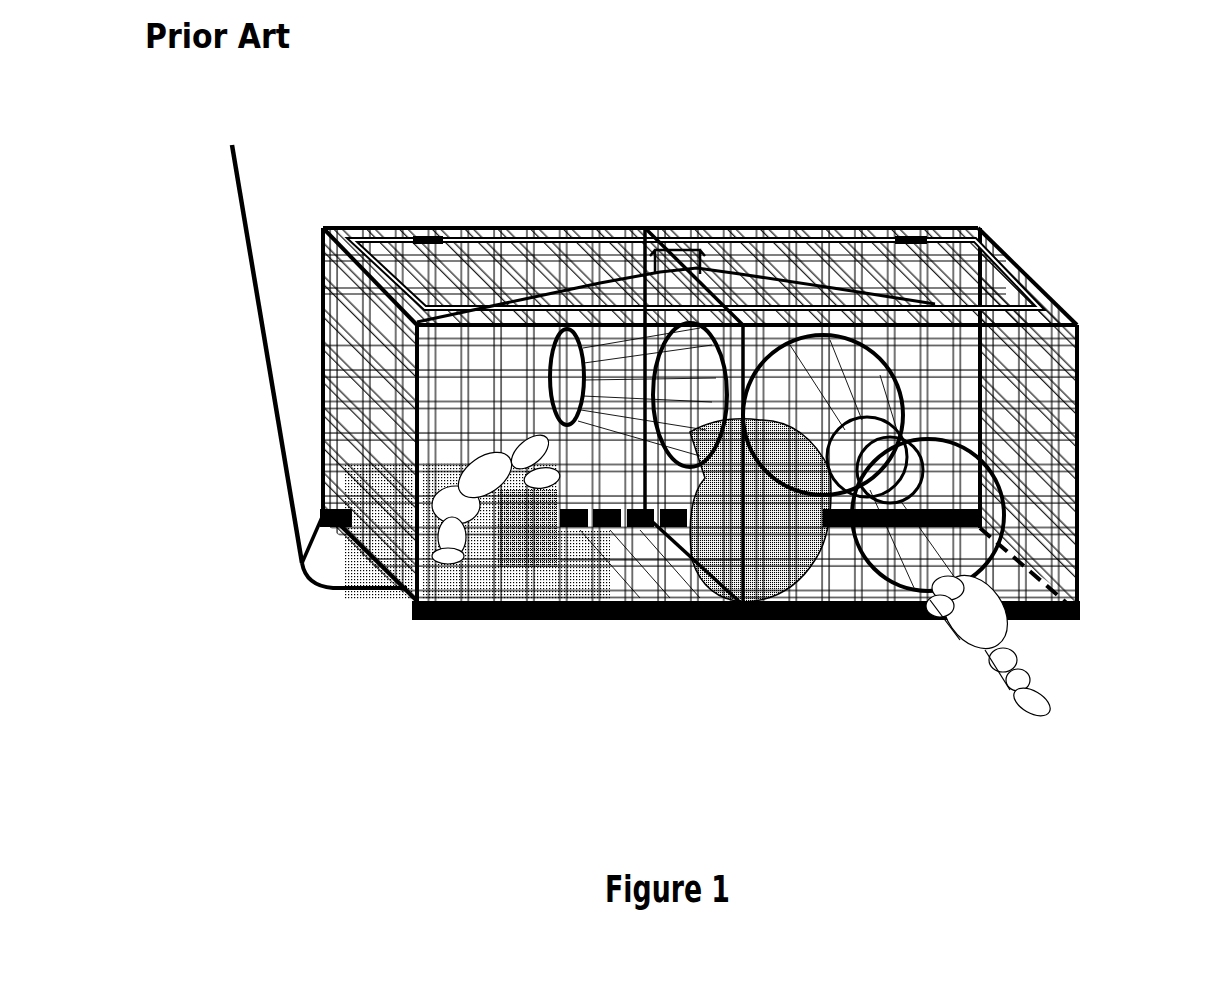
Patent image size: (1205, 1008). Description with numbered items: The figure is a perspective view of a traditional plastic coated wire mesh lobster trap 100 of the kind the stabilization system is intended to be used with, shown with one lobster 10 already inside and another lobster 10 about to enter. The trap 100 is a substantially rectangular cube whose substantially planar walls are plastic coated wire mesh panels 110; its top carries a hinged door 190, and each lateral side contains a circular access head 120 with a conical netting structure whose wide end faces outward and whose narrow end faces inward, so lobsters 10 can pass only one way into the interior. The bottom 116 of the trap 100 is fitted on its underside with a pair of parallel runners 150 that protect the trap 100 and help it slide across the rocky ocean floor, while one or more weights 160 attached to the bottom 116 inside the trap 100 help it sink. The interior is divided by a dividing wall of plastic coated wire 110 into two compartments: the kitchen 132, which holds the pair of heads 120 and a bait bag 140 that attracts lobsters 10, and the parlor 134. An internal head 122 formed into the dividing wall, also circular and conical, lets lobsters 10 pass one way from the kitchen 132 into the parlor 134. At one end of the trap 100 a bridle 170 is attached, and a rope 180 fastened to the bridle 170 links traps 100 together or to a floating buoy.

The lobster 10 is at (510, 612).
The wire lobster trap 100 is at (985, 229).
The plastic coated wire mesh panels 110 is at (350, 238).
The bottom 116 is at (390, 567).
The access head 120 is at (892, 376).
The internal head 122 is at (735, 340).
The kitchen 132 is at (947, 400).
The parlor 134 is at (650, 622).
The bait bag 140 is at (768, 622).
The runners 150 is at (322, 522).
The weights 160 is at (350, 470).
The bridle 170 is at (320, 588).
The rope 180 is at (247, 270).
The hinged door 190 is at (478, 229).